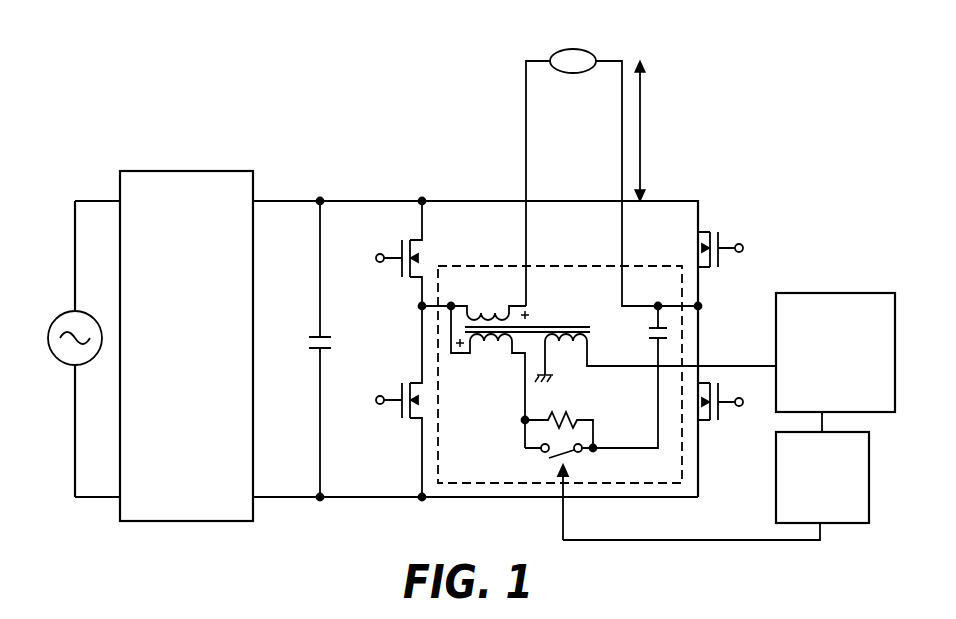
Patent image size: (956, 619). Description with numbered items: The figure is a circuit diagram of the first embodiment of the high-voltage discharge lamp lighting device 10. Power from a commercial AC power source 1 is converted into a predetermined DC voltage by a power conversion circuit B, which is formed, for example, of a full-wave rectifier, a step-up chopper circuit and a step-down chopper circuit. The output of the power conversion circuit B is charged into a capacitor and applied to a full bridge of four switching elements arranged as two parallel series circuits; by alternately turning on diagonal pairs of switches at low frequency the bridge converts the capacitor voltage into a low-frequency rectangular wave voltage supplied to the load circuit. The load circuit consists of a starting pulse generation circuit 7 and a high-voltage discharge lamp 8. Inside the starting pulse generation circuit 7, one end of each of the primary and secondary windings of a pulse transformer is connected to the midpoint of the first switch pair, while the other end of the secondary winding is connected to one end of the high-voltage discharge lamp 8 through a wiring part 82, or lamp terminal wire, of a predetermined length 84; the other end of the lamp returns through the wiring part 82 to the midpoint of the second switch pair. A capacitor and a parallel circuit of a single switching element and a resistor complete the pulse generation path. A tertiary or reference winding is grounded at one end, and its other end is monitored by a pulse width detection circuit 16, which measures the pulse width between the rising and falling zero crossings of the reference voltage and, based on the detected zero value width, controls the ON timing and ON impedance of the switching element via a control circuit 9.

The high-voltage discharge lamp lighting device 10 is at (93, 134).
The commercial AC power source 1 is at (67, 363).
The power conversion circuit B is at (188, 521).
The starting pulse generation circuit 7 is at (555, 265).
The high-voltage discharge lamp 8 is at (557, 52).
The wiring part 82 is at (622, 140).
The predetermined length 84 is at (641, 96).
The pulse width detection circuit 16 is at (822, 293).
The control circuit 9 is at (837, 523).